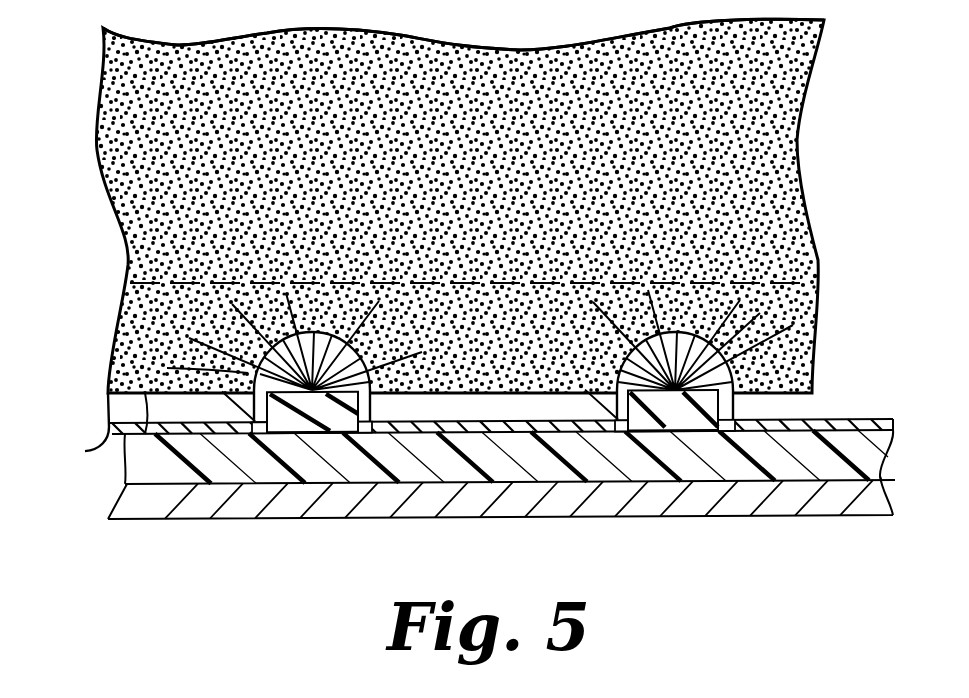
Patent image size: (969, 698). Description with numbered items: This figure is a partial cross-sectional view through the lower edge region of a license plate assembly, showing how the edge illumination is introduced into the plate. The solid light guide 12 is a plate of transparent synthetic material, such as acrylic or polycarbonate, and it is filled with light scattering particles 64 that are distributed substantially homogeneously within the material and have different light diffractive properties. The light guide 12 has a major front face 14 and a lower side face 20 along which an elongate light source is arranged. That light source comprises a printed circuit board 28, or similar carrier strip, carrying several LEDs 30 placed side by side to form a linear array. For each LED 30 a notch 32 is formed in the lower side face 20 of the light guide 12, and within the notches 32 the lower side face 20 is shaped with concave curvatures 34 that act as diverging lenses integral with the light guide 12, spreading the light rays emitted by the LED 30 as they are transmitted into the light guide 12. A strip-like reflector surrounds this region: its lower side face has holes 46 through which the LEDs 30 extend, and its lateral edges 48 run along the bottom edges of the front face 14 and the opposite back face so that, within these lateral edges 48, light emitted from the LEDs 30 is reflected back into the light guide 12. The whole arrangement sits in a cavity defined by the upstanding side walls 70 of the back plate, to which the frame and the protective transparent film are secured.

The light guide 12 is at (780, 77).
The major front face 14 is at (772, 160).
The lower side face 20 is at (86, 451).
The printed circuit board 28 is at (837, 467).
The LEDs 30 is at (273, 410).
The notch 32 is at (267, 347).
The concave curvatures 34 is at (340, 397).
The holes 46 is at (235, 394).
The lateral edges 48 is at (825, 293).
The light scattering particles 64 is at (180, 235).
The upstanding side walls 70 is at (200, 510).